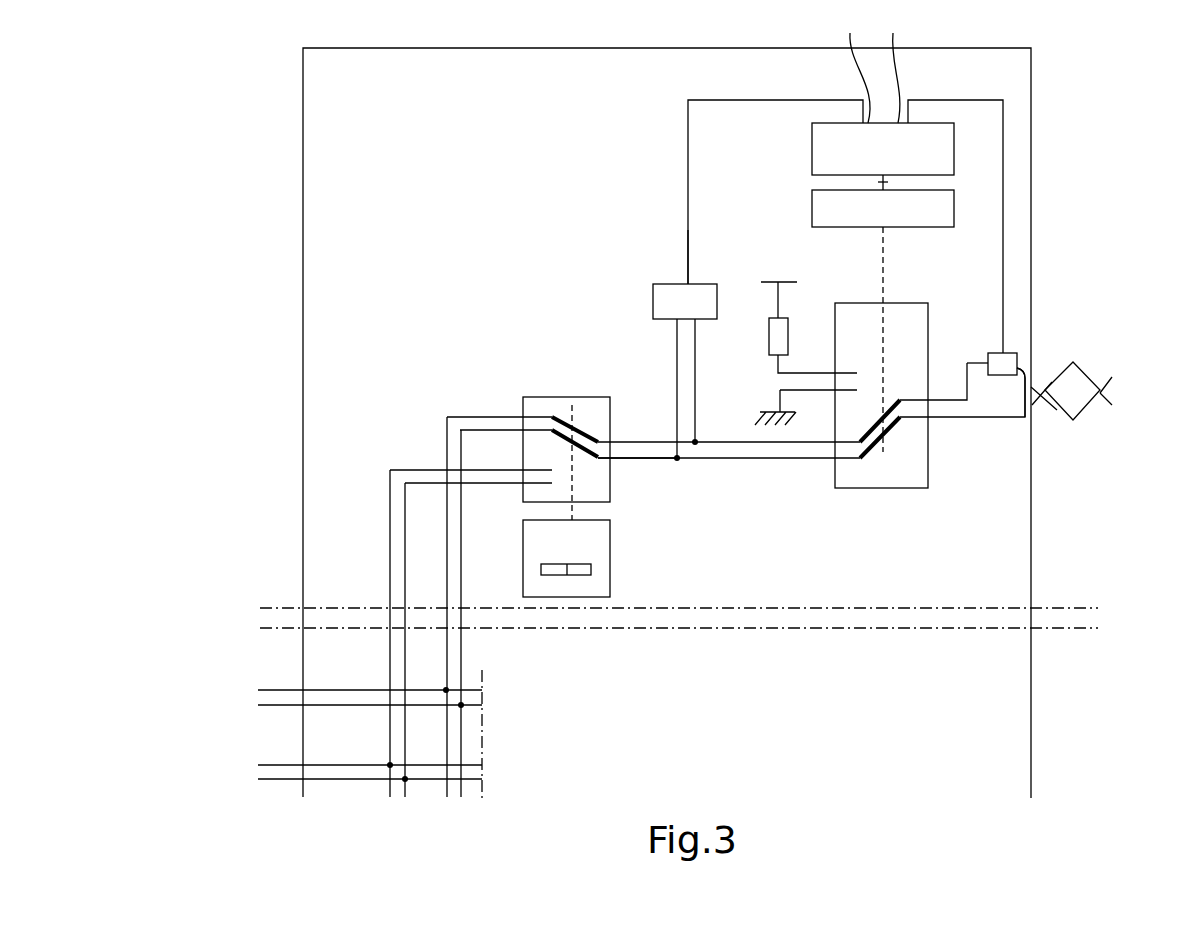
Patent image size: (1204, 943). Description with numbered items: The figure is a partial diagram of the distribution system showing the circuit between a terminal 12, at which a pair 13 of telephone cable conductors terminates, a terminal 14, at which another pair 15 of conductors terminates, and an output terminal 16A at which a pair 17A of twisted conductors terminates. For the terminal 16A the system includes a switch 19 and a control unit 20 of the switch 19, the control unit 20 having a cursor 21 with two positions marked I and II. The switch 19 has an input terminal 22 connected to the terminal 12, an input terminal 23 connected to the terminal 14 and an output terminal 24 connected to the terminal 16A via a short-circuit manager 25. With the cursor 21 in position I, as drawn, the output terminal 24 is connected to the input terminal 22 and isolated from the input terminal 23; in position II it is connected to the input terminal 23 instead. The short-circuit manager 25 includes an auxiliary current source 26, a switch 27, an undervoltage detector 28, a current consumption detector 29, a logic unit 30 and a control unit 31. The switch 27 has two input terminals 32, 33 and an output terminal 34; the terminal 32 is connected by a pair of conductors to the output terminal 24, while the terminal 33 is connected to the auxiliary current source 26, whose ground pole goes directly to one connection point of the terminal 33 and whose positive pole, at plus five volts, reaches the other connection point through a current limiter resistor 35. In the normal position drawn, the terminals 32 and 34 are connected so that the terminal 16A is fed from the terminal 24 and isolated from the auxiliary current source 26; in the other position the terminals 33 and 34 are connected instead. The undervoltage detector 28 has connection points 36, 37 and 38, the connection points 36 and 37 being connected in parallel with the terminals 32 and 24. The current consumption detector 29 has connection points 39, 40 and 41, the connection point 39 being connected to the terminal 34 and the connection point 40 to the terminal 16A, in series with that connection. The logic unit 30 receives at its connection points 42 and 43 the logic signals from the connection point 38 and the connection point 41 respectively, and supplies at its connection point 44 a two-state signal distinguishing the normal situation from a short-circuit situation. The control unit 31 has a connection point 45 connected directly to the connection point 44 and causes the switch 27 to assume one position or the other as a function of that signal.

The terminal 12 is at (303, 698).
The pair of conductors 13 is at (270, 700).
The terminal 14 is at (303, 772).
The pair of conductors 15 is at (267, 776).
The terminal 16A is at (1031, 397).
The pair of twisted conductors 17A is at (1072, 388).
The switch 19 is at (550, 397).
The control unit 20 is at (590, 597).
The cursor 21 is at (556, 576).
The input terminal 22 is at (523, 425).
The input terminal 23 is at (522, 482).
The output terminal 24 is at (612, 456).
The short-circuit manager 25 is at (566, 206).
The auxiliary current source 26 is at (758, 236).
The switch 27 is at (890, 488).
The undervoltage detector 28 is at (665, 296).
The current consumption detector 29 is at (997, 353).
The logic unit 30 is at (897, 160).
The control unit 31 is at (943, 210).
The input terminal 32 is at (835, 452).
The input terminal 33 is at (836, 380).
The output terminal 34 is at (928, 412).
The current limiter resistor 35 is at (772, 333).
The connection point 36 is at (675, 321).
The connection point 37 is at (697, 325).
The connection point 38 is at (686, 283).
The connection point 39 is at (988, 362).
The connection point 40 is at (1017, 370).
The connection point 41 is at (1075, 307).
The connection point 42 is at (853, 65).
The connection point 43 is at (892, 65).
The connection point 44 is at (883, 184).
The connection point 45 is at (883, 185).